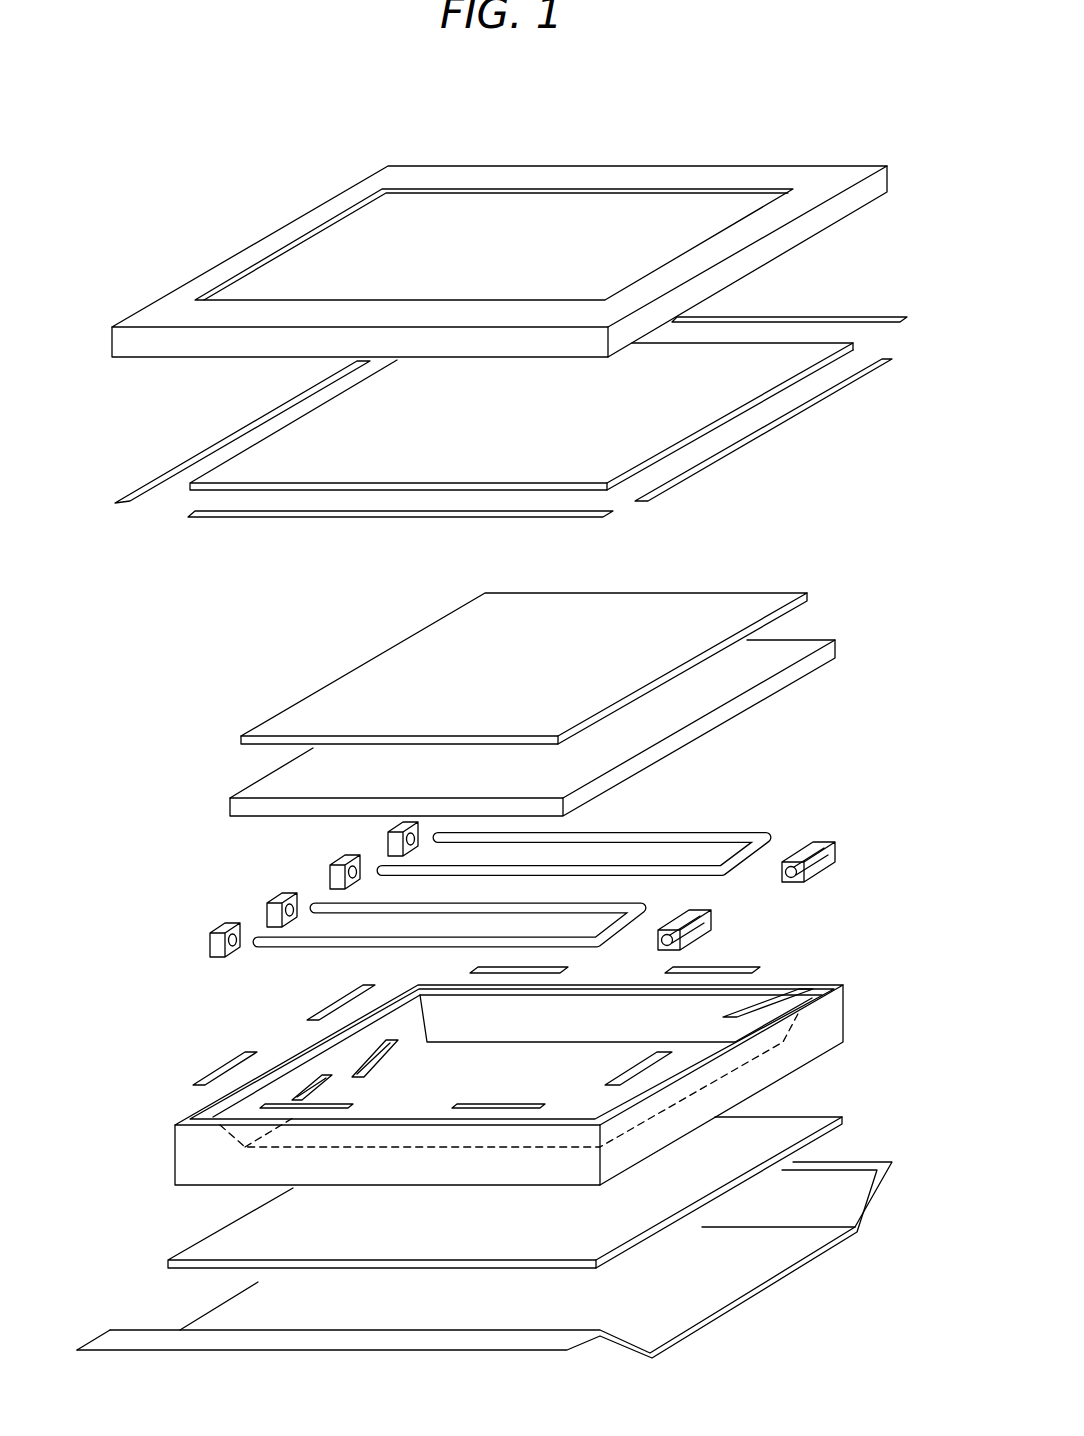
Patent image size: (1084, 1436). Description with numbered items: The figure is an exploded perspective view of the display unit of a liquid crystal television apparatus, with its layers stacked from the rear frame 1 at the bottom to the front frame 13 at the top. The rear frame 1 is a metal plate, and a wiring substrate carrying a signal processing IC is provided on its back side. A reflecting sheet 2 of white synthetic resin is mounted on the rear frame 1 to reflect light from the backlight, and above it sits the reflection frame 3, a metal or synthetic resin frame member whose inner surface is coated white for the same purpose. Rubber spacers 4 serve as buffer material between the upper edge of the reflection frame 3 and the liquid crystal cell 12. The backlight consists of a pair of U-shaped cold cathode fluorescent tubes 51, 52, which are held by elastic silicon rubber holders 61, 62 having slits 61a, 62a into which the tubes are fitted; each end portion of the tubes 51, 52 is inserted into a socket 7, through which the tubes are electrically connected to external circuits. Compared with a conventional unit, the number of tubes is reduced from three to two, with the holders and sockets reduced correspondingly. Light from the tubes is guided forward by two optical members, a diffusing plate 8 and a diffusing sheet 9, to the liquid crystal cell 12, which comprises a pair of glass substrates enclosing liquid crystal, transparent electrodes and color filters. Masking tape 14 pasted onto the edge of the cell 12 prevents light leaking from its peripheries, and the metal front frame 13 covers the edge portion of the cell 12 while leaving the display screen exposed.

The rear frame 1 is at (688, 1308).
The reflecting sheet 2 is at (227, 1237).
The reflection frame 3 is at (175, 1155).
The rubber spacer 4 is at (222, 1062).
The cold cathode fluorescent tube 51 is at (690, 832).
The cold cathode fluorescent tube 52 is at (310, 943).
The socket 7 is at (328, 866).
The diffusing plate 8 is at (668, 712).
The diffusing sheet 9 is at (400, 650).
The liquid crystal cell 12 is at (648, 430).
The front frame 13 is at (636, 173).
The masking tape 14 is at (853, 318).
The holder 61 is at (855, 839).
The slit 61a is at (858, 872).
The holder 62 is at (731, 922).
The slit 62a is at (733, 937).